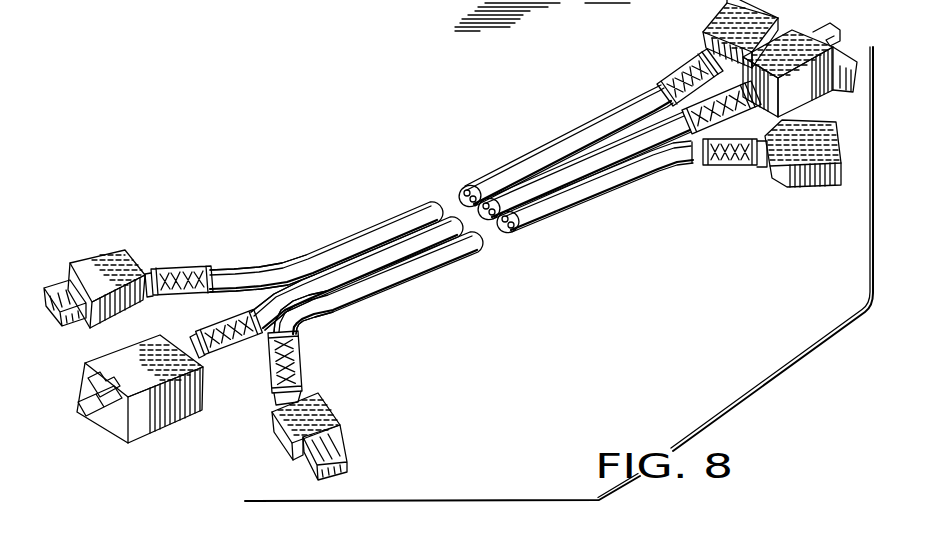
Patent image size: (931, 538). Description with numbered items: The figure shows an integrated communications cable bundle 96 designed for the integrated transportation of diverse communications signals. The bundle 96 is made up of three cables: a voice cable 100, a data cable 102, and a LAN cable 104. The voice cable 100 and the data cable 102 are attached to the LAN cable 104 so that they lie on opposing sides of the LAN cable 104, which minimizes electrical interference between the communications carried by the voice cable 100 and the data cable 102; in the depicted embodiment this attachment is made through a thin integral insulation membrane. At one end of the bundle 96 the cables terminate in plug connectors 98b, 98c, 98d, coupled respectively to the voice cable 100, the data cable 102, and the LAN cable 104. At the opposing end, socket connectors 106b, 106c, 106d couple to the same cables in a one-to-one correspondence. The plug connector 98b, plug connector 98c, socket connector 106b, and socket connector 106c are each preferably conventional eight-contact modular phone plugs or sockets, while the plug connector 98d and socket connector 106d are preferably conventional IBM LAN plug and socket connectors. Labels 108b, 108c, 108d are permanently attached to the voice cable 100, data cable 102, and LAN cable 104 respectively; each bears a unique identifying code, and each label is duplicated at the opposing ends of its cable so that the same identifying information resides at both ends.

The communications cable bundle 96 is at (427, 268).
The voice cable 100 is at (258, 236).
The LAN cable 104 is at (258, 346).
The data cable 102 is at (278, 396).
The label 108b is at (210, 265).
The label 108c is at (300, 368).
The label 108d is at (214, 330).
The plug connector 98b is at (112, 254).
The plug connector 98c is at (330, 409).
The plug connector 98d is at (110, 440).
The socket connector 106b is at (702, 32).
The socket connector 106c is at (800, 187).
The socket connector 106d is at (793, 32).